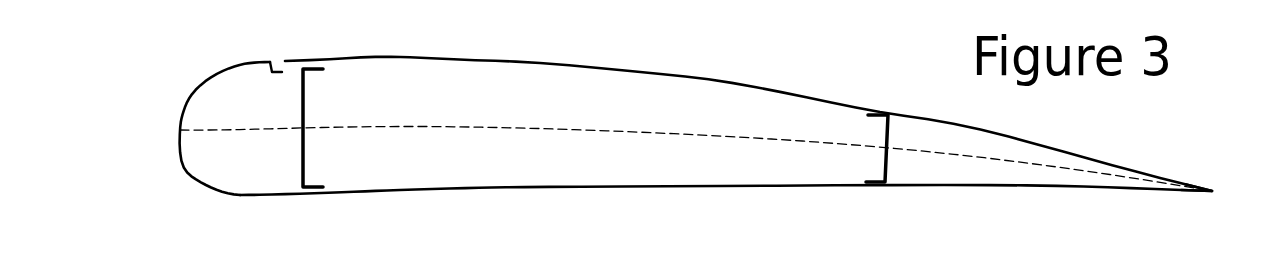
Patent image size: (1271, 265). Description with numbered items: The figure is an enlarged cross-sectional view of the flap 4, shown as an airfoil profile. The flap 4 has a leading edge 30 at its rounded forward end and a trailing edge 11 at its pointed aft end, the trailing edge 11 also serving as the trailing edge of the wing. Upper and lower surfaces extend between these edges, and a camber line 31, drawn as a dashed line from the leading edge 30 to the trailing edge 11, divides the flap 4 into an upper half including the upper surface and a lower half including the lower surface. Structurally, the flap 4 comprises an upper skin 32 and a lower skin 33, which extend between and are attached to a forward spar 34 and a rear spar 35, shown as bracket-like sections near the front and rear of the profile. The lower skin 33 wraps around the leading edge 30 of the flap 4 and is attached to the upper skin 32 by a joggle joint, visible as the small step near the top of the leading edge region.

The flap 4 is at (689, 132).
The trailing edge 11 is at (1212, 191).
The leading edge 30 is at (178, 127).
The camber line 31 is at (475, 127).
The upper skin 32 is at (642, 72).
The lower skin 33 is at (510, 188).
The forward spar 34 is at (303, 118).
The rear spar 35 is at (883, 143).